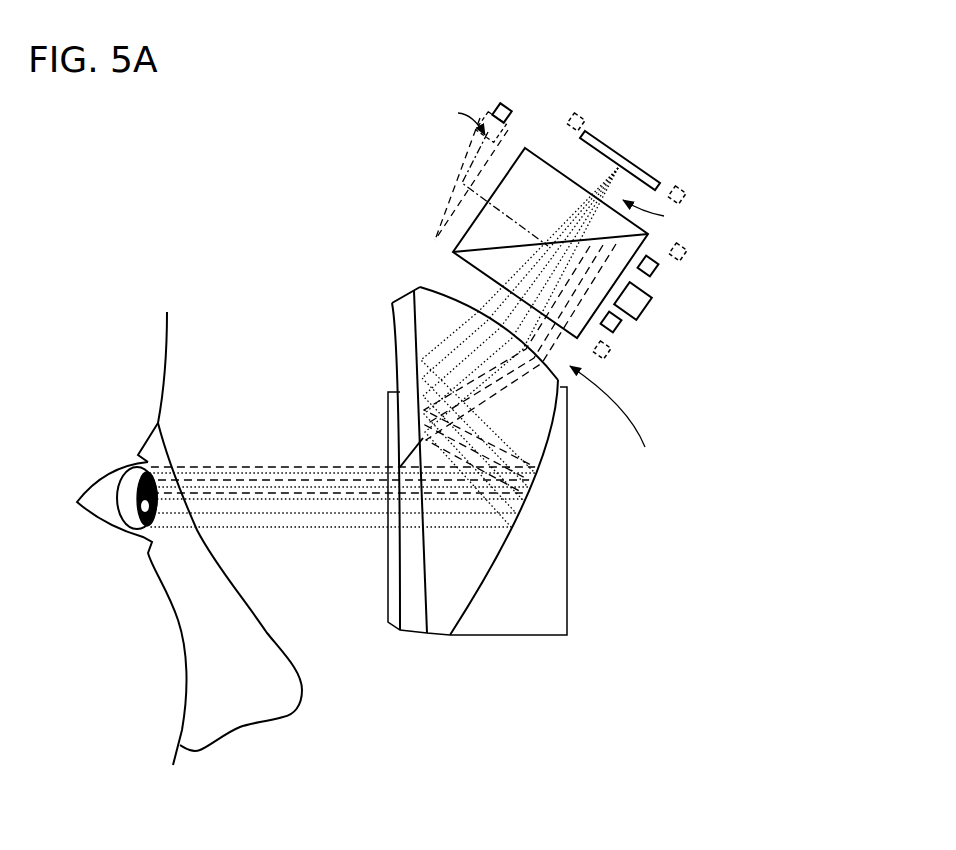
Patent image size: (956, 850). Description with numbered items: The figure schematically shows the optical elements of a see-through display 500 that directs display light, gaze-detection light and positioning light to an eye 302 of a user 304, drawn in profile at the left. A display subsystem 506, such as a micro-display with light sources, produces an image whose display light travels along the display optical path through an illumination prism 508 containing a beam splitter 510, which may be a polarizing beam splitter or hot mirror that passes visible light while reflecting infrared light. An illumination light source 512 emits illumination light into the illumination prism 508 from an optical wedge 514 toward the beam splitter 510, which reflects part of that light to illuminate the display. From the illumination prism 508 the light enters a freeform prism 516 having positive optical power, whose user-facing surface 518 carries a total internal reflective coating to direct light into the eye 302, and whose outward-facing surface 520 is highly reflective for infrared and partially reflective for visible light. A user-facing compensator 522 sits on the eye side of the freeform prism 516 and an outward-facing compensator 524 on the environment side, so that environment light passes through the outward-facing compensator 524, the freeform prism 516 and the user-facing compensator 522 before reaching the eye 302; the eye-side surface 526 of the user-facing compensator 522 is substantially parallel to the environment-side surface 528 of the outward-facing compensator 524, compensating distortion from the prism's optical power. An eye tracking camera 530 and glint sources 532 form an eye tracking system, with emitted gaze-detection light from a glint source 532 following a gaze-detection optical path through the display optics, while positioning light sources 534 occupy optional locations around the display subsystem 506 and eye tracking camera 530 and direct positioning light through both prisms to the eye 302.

The eye 302 is at (113, 503).
The user 304 is at (130, 360).
The see-through display 500 is at (489, 352).
The display subsystem 506 is at (635, 133).
The illumination prism 508 is at (526, 143).
The beam splitter 510 is at (512, 258).
The illumination light source 512 is at (505, 104).
The optical wedge 514 is at (458, 153).
The freeform prism 516 is at (470, 445).
The user-facing surface 518 is at (399, 333).
The outward-facing surface 520 is at (593, 415).
The user-facing compensator 522 is at (383, 395).
The outward-facing compensator 524 is at (575, 467).
The eye-side surface 526 is at (388, 558).
The environment-side surface 528 is at (568, 555).
The eye tracking camera 530 is at (656, 301).
The glint source 532 is at (662, 271).
The positioning light source 534 is at (660, 398).